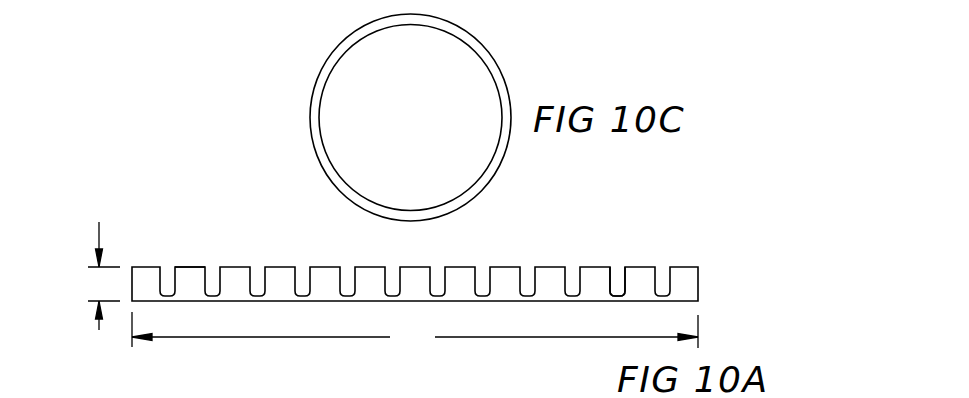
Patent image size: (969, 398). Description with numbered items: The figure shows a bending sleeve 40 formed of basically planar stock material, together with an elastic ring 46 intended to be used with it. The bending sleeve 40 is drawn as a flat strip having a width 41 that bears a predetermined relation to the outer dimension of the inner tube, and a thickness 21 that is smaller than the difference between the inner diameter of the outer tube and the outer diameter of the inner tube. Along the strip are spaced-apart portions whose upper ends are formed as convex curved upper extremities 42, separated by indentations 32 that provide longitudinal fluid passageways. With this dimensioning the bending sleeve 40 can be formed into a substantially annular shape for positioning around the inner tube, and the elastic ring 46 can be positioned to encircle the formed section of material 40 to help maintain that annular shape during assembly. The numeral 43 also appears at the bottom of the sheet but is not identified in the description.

In FIG. 10C, the elastic ring 46 is at (311, 95).
In FIG. 10A, the bending sleeve 40 is at (698, 282).
In FIG. 10A, the convex curved upper extremities 42 is at (189, 267).
In FIG. 10A, the indentations 32 is at (614, 282).
In FIG. 10A, the width 41 is at (415, 332).
In FIG. 10A, the thickness 21 is at (101, 262).
In FIG. 10A, the strip 43 is at (245, 391).